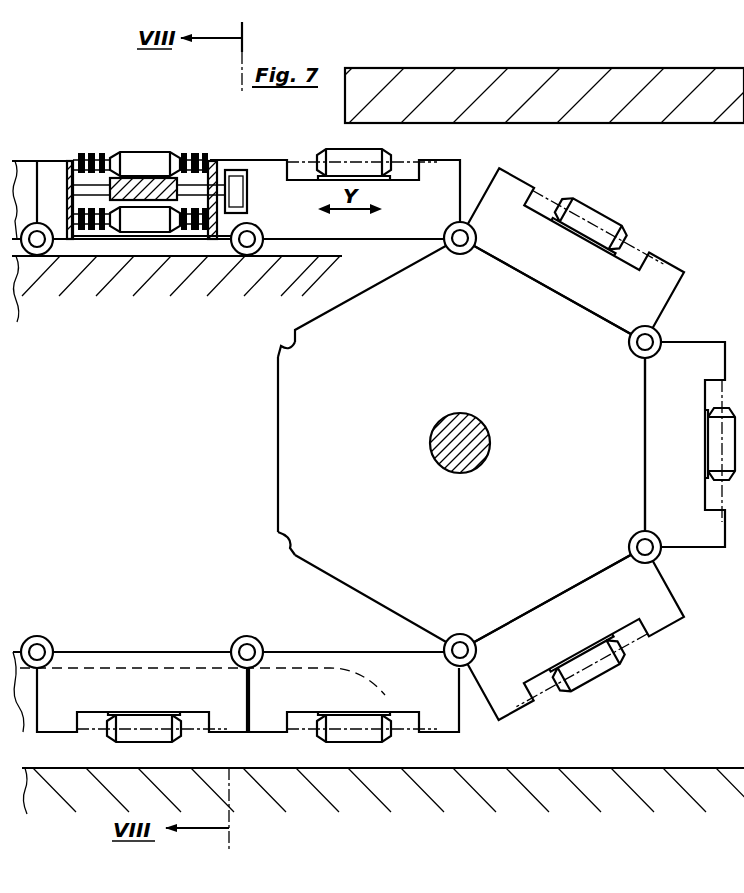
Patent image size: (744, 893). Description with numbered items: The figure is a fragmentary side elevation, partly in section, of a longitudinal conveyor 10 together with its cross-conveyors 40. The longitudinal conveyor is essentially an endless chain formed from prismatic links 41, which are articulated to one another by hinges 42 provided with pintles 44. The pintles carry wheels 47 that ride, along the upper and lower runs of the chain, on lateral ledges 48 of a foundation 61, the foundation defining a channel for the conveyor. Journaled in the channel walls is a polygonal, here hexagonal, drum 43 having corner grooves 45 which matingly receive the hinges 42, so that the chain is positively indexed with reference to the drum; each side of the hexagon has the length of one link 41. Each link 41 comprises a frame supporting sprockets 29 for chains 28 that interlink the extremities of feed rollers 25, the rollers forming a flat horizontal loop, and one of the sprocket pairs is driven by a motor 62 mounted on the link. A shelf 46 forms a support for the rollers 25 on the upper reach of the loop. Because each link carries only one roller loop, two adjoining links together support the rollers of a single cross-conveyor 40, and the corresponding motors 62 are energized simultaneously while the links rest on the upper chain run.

The longitudinal conveyor 10 is at (165, 143).
The feed roller 25 is at (160, 152).
The chain 28 is at (80, 150).
The sprocket 29 is at (93, 150).
The cross-conveyor 40 is at (373, 410).
The prismatic link 41 is at (64, 166).
The hinge 42 is at (477, 182).
The hexagonal drum 43 is at (308, 357).
The pintle 44 is at (460, 242).
The corner groove 45 is at (287, 345).
The shelf 46 is at (133, 176).
The wheel 47 is at (244, 255).
The lateral ledge 48 is at (85, 257).
The foundation 61 is at (322, 258).
The motor 62 is at (238, 192).